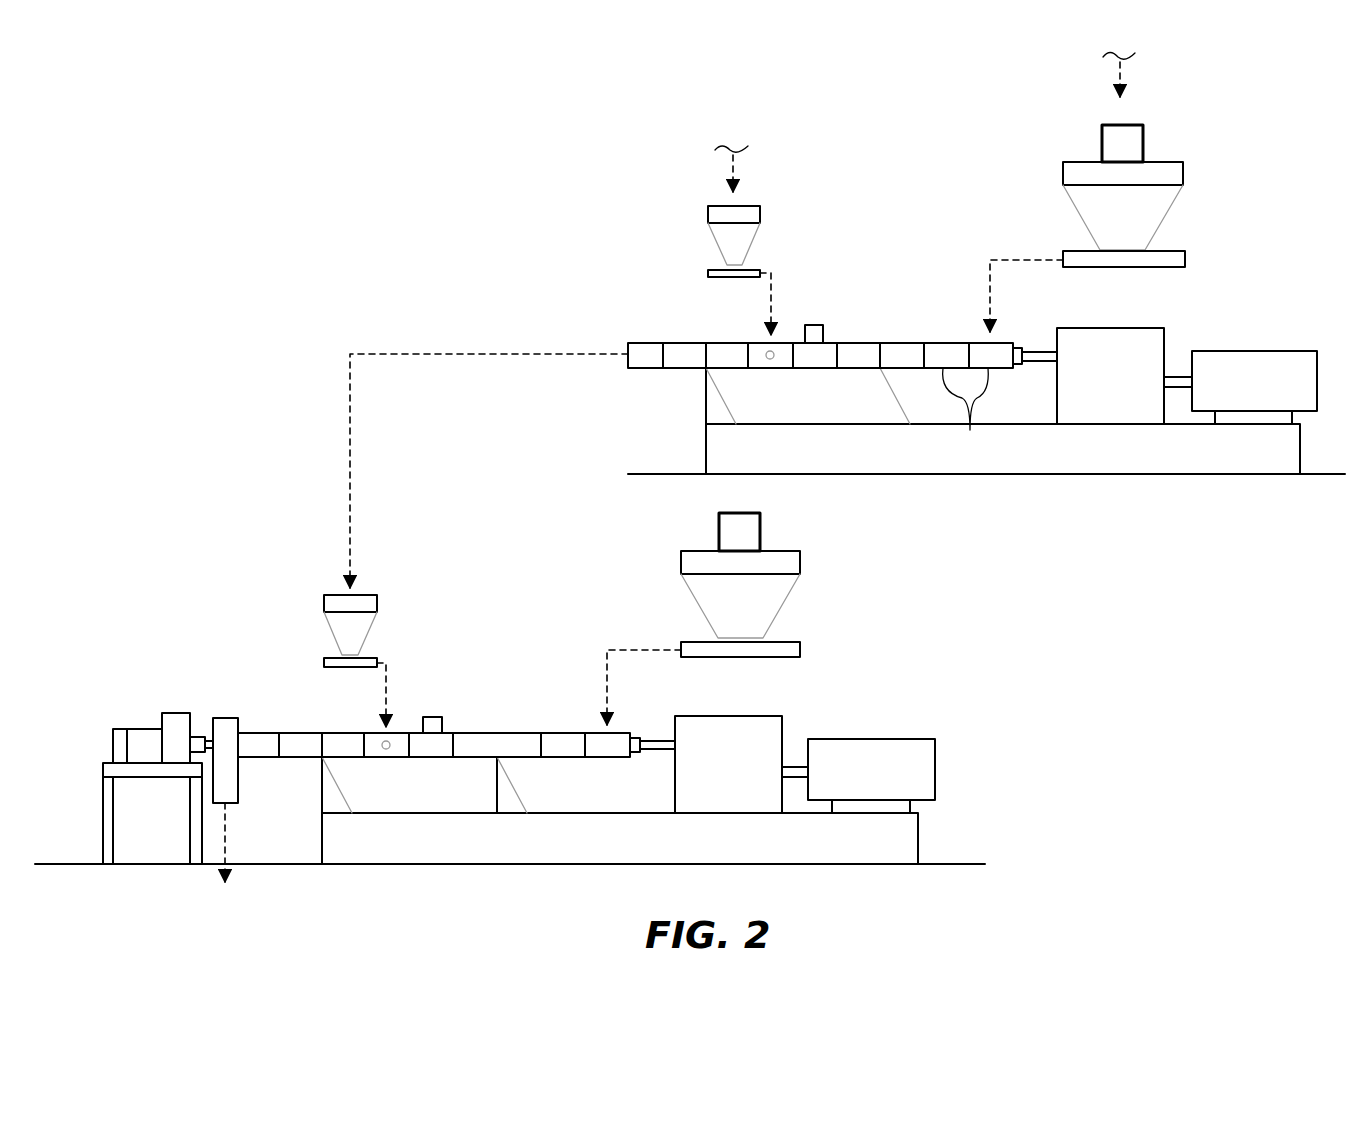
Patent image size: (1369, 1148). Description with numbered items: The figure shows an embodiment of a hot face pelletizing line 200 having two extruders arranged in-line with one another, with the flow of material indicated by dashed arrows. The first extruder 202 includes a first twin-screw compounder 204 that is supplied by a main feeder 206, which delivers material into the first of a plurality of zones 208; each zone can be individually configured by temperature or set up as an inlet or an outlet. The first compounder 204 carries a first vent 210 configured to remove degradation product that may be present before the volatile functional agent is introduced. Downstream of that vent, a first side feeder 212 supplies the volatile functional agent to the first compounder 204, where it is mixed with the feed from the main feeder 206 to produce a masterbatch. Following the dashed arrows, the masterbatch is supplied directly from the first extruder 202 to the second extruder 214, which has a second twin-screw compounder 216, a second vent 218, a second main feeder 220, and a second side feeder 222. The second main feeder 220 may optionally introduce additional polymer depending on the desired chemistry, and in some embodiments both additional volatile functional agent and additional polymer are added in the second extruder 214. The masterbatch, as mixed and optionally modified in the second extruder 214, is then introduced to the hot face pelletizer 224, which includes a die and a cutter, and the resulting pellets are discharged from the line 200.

The hot face pelletizing line 200 is at (196, 249).
The first extruder 202 is at (1208, 329).
The first twin-screw compounder 204 is at (957, 343).
The main feeder 206 is at (1063, 172).
The zones 208 is at (967, 421).
The first vent 210 is at (823, 328).
The first side feeder 212 is at (760, 212).
The second extruder 214 is at (838, 714).
The second twin-screw compounder 216 is at (571, 733).
The second vent 218 is at (443, 722).
The second main feeder 220 is at (792, 590).
The second side feeder 222 is at (372, 622).
The hot face pelletizer 224 is at (225, 718).